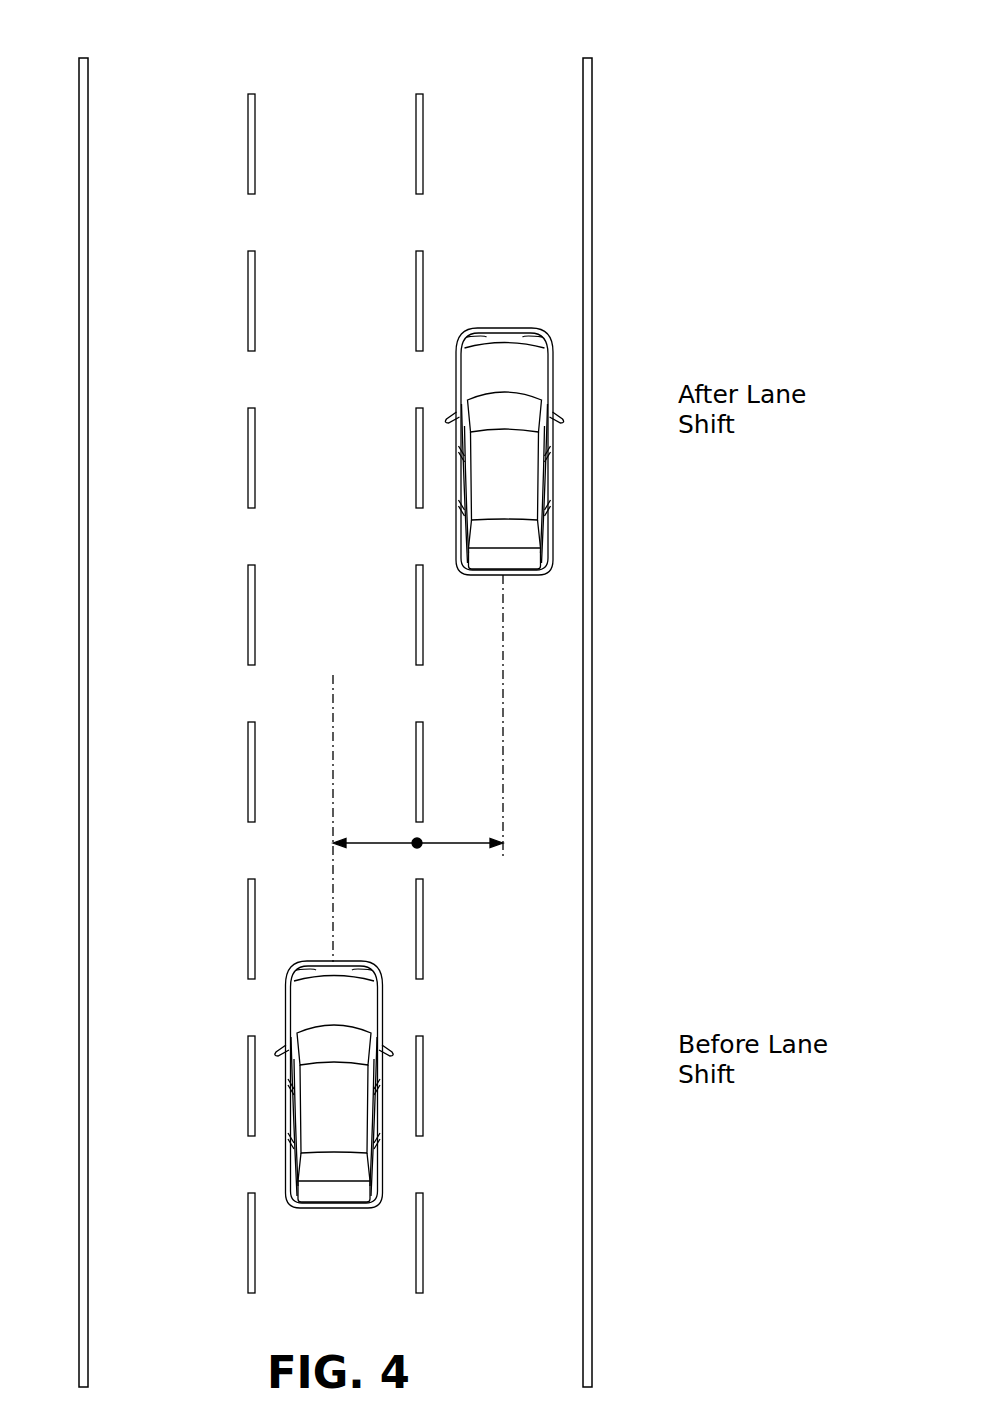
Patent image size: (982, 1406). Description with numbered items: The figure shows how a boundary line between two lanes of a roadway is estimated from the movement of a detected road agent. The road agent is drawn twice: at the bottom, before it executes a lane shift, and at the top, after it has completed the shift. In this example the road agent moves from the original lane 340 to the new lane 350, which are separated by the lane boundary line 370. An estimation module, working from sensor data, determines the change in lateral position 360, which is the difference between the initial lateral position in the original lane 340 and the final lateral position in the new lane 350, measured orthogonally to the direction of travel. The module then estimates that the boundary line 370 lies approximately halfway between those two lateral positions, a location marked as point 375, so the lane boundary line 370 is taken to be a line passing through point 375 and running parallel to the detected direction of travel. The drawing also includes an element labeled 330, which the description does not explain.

The road edge 330 is at (592, 257).
The original lane 340 is at (323, 125).
The new lane 350 is at (491, 125).
The change in lateral position 360 is at (463, 845).
The lane boundary line 370 is at (423, 948).
The point 375 is at (420, 840).